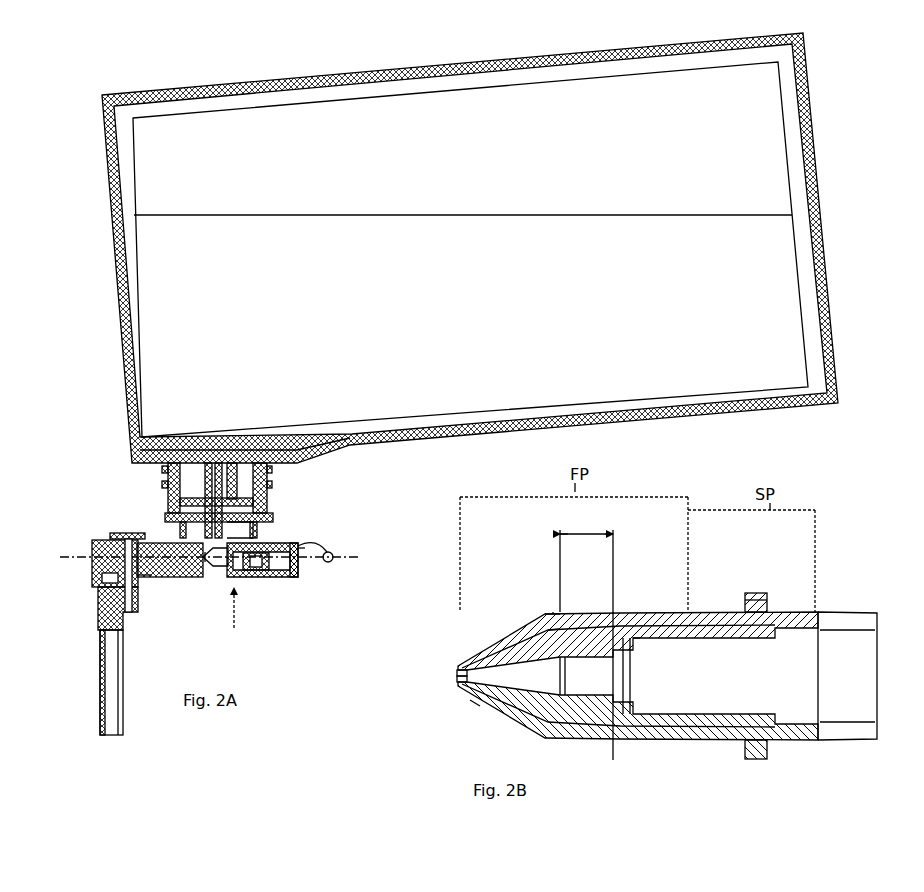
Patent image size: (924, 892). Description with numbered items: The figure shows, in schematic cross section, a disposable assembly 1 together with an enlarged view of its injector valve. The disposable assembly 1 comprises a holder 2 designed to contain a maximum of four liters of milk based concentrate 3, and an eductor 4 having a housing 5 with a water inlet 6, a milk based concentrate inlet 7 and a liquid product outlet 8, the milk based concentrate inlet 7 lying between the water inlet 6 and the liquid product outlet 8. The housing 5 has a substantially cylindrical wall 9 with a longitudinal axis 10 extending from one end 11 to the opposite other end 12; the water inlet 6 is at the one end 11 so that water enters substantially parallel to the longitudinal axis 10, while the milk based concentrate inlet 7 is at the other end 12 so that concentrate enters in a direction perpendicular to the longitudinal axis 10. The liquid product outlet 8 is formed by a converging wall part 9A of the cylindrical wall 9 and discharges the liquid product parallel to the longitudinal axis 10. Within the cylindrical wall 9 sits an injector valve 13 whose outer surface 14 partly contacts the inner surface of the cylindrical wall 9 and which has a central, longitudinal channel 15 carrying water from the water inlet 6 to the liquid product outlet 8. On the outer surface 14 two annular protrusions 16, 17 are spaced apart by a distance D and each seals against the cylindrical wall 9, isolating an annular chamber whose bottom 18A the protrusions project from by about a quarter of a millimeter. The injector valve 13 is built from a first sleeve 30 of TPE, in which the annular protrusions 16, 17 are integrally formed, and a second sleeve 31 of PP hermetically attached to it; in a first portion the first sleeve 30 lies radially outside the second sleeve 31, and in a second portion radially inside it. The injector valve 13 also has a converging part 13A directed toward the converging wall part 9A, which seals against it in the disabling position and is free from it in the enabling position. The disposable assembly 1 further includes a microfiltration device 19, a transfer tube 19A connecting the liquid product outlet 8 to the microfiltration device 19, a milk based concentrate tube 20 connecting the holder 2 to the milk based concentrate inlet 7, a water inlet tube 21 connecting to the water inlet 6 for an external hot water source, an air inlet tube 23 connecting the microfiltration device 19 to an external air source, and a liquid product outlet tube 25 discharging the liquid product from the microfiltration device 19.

In FIG. 2A, the disposable assembly 1 is at (813, 110).
In FIG. 2A, the holder 2 is at (800, 295).
In FIG. 2A, the milk based concentrate 3 is at (436, 303).
In FIG. 2A, the eductor 4 is at (238, 651).
In FIG. 2A, the housing 5 is at (260, 580).
In FIG. 2A, the water inlet 6 is at (295, 573).
In FIG. 2A, the milk based concentrate inlet 7 is at (170, 520).
In FIG. 2A, the liquid product outlet 8 is at (185, 573).
In FIG. 2A, the cylindrical wall 9 is at (252, 578).
In FIG. 2A, the converging wall part 9A is at (207, 573).
In FIG. 2A, the longitudinal axis 10 is at (347, 556).
In FIG. 2A, the one end 11 is at (300, 538).
In FIG. 2A, the other end 12 is at (208, 575).
In FIG. 2A, the injector valve 13 is at (260, 577).
In FIG. 2B, the injector valve 13 is at (712, 753).
In FIG. 2B, the converging part 13A is at (520, 715).
In FIG. 2B, the outer surface 14 is at (536, 611).
In FIG. 2A, the central, longitudinal channel 15 is at (268, 537).
In FIG. 2B, the central, longitudinal channel 15 is at (662, 680).
In FIG. 2B, the annular protrusion 16 is at (552, 612).
In FIG. 2B, the annular protrusion 17 is at (613, 612).
In FIG. 2B, the bottom of the annular chamber 18A is at (585, 612).
In FIG. 2A, the microfiltration device 19 is at (103, 548).
In FIG. 2A, the transfer tube 19A is at (152, 575).
In FIG. 2A, the milk based concentrate tube 20 is at (168, 480).
In FIG. 2A, the water inlet tube 21 is at (270, 533).
In FIG. 2A, the air inlet tube 23 is at (122, 532).
In FIG. 2A, the liquid product outlet tube 25 is at (122, 708).
In FIG. 2B, the first sleeve 30 is at (713, 612).
In FIG. 2B, the second sleeve 31 is at (758, 592).